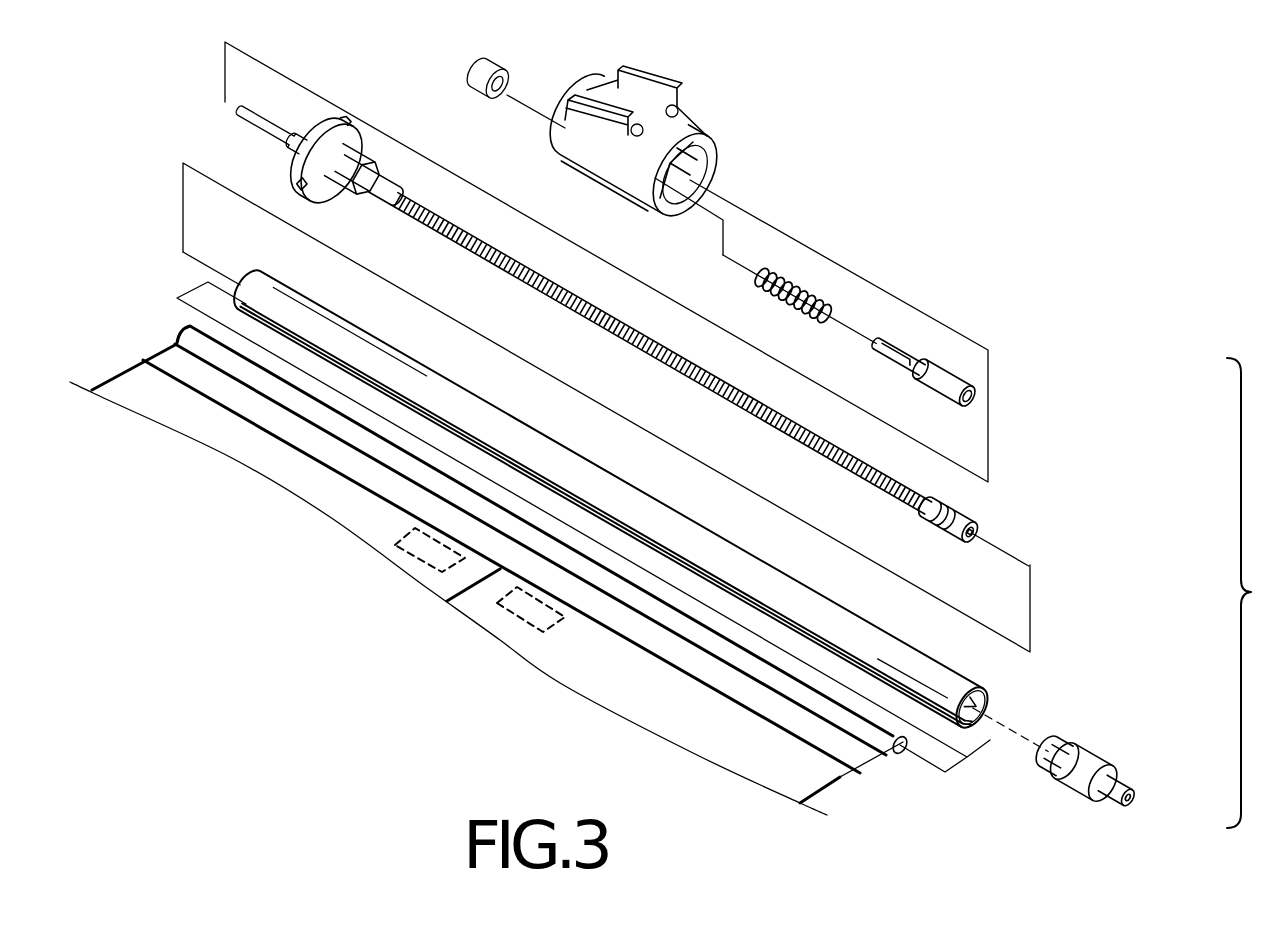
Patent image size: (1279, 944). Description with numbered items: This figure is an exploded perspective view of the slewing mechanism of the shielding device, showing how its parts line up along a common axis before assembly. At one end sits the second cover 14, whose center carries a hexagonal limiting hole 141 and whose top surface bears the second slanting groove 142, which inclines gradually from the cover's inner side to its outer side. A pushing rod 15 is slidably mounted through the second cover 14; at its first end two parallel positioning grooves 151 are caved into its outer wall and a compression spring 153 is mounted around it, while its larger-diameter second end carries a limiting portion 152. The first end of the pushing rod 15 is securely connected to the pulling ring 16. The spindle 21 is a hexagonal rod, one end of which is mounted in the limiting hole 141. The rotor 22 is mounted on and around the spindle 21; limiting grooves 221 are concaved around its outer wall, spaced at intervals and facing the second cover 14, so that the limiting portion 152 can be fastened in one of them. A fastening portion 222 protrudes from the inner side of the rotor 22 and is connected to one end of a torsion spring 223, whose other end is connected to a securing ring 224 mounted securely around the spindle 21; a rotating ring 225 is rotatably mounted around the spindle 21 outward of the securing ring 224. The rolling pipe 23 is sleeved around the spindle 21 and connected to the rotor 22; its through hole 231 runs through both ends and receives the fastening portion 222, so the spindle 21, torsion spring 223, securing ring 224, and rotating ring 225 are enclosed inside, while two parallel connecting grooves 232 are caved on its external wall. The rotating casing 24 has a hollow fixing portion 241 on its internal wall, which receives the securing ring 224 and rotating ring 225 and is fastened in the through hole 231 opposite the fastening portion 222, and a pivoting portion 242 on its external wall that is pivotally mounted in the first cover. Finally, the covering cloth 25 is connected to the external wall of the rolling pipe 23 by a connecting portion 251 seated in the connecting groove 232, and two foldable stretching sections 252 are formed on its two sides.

The second cover 14 is at (657, 136).
The limiting hole 141 is at (676, 165).
The second slanting groove 142 is at (625, 100).
The pushing rod 15 is at (936, 353).
The positioning grooves 151 is at (878, 352).
The limiting portion 152 is at (960, 385).
The compression spring 153 is at (818, 290).
The pulling ring 16 is at (478, 78).
The spindle 21 is at (237, 118).
The rotor 22 is at (329, 158).
The limiting grooves 221 is at (292, 172).
The fastening portion 222 is at (372, 178).
The torsion spring 223 is at (900, 497).
The securing ring 224 is at (992, 522).
The rotating ring 225 is at (975, 526).
The rolling pipe 23 is at (623, 505).
The through hole 231 is at (975, 702).
The connecting groove 232 is at (965, 724).
The rotating casing 24 is at (1089, 768).
The fixing portion 241 is at (1050, 777).
The pivoting portion 242 is at (1118, 790).
The covering cloth 25 is at (519, 576).
The connecting portion 251 is at (900, 750).
The stretching sections 252 is at (588, 682).